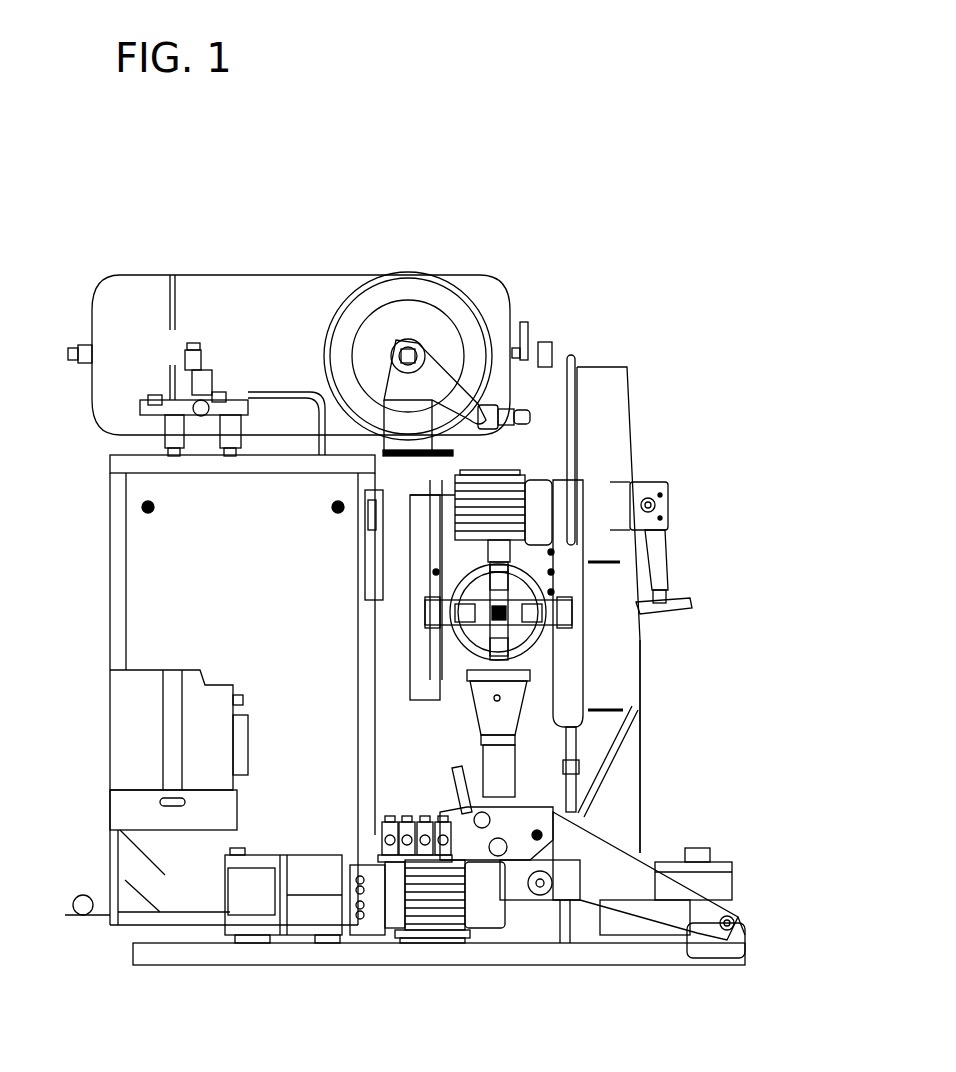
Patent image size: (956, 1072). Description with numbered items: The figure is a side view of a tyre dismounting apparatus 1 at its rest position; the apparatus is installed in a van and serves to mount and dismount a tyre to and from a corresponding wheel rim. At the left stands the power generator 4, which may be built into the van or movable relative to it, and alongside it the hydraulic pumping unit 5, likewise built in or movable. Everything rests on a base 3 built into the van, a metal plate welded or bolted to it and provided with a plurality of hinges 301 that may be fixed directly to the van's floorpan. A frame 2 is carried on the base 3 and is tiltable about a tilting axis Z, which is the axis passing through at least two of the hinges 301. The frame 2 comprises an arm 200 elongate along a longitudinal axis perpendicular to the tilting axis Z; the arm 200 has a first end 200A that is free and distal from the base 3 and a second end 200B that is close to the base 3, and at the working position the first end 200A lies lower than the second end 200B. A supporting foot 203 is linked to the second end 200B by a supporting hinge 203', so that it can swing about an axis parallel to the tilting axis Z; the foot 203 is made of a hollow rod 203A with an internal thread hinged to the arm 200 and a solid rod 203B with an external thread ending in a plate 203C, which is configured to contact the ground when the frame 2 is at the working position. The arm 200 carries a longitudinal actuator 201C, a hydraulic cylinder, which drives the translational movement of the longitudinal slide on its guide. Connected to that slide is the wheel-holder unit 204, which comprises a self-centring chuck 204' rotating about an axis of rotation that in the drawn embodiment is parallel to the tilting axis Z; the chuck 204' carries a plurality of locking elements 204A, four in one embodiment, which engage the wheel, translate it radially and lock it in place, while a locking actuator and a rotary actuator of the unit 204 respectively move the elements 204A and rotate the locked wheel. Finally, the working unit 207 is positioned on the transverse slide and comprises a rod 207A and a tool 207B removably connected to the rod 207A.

The tyre dismounting apparatus 1 is at (90, 299).
The frame 2 is at (655, 890).
The base 3 is at (620, 958).
The power generator 4 is at (175, 588).
The hydraulic pumping unit 5 is at (436, 900).
The arm 200 is at (620, 683).
The first end 200A is at (605, 403).
The second end 200B is at (627, 832).
The longitudinal actuator 201C is at (510, 480).
The supporting foot 203 is at (723, 504).
The supporting hinge 203' is at (678, 459).
The hollow rod 203A is at (660, 570).
The solid rod 203B is at (665, 595).
The plate 203C is at (670, 604).
The wheel-holder unit 204 is at (546, 410).
The self-centring chuck 204' is at (656, 451).
The locking elements 204A is at (567, 617).
The working unit 207 is at (651, 733).
The rod 207A is at (502, 777).
The tool 207B is at (500, 713).
The hinges 301 is at (727, 933).
The tilting axis Z is at (745, 925).